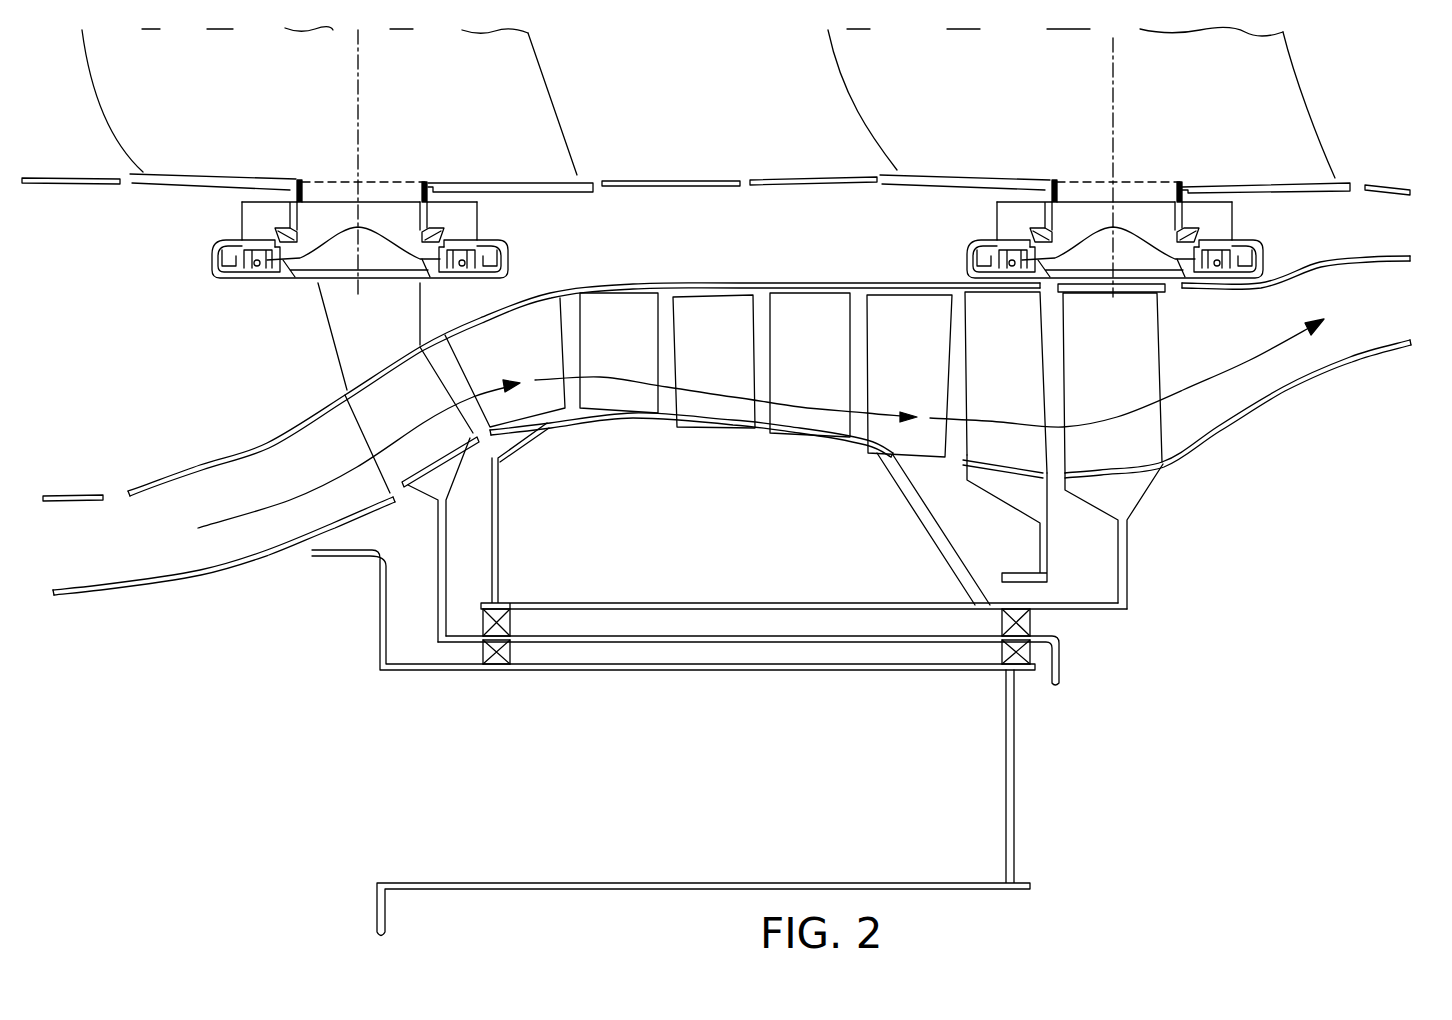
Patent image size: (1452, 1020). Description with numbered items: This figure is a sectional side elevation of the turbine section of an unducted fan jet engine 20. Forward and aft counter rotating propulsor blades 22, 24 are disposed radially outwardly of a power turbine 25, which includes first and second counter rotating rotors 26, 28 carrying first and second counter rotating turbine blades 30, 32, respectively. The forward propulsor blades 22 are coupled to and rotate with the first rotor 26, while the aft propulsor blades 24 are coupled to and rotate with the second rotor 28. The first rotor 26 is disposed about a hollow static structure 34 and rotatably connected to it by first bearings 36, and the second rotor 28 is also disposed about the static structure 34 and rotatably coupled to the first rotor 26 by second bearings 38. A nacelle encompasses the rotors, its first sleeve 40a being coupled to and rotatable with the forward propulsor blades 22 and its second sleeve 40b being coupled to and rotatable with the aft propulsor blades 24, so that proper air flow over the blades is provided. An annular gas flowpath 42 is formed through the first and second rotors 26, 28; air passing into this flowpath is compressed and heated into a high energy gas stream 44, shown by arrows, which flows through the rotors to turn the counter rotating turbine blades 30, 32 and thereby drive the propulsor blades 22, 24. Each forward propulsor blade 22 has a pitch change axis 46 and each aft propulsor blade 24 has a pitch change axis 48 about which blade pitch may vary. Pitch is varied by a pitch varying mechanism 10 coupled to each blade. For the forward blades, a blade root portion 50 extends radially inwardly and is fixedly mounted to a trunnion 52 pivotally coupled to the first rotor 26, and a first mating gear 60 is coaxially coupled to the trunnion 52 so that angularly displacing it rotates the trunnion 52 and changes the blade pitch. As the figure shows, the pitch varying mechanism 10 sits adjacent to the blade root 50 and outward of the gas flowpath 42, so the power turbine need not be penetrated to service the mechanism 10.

The pitch varying mechanism 10 is at (195, 280).
The unducted fan jet engine 20 is at (691, 100).
The forward propulsor blades 22 is at (103, 65).
The aft propulsor blades 24 is at (1272, 50).
The power turbine 25 is at (667, 252).
The first rotor 26 is at (265, 443).
The second rotor 28 is at (805, 437).
The first turbine blades 30 is at (412, 417).
The second turbine blades 32 is at (522, 362).
The hollow static structure 34 is at (1010, 830).
The first bearings 36 is at (491, 672).
The second bearings 38 is at (500, 605).
The first sleeve 40a is at (82, 176).
The second sleeve 40b is at (840, 177).
The annular gas flowpath 42 is at (117, 513).
The high energy gas stream 44 is at (330, 487).
The pitch change axes 46 is at (362, 89).
The pitch change axes 48 is at (1117, 112).
The blade root portion 50 is at (393, 193).
The trunnion 52 is at (318, 233).
The first mating gear 60 is at (430, 277).